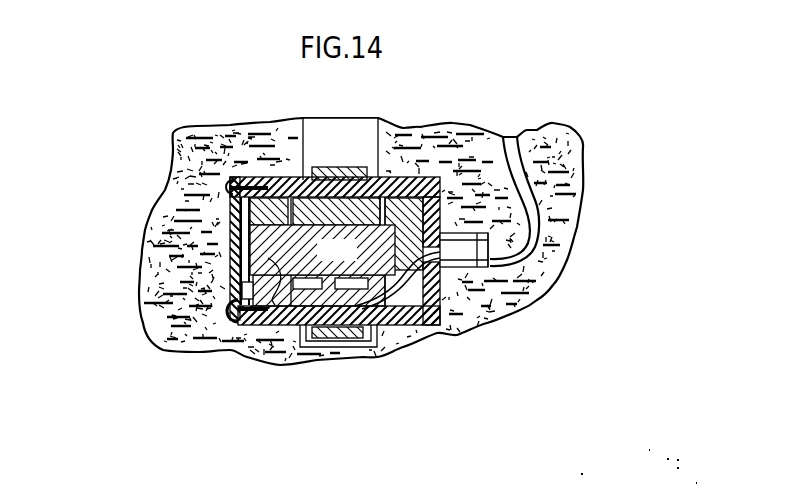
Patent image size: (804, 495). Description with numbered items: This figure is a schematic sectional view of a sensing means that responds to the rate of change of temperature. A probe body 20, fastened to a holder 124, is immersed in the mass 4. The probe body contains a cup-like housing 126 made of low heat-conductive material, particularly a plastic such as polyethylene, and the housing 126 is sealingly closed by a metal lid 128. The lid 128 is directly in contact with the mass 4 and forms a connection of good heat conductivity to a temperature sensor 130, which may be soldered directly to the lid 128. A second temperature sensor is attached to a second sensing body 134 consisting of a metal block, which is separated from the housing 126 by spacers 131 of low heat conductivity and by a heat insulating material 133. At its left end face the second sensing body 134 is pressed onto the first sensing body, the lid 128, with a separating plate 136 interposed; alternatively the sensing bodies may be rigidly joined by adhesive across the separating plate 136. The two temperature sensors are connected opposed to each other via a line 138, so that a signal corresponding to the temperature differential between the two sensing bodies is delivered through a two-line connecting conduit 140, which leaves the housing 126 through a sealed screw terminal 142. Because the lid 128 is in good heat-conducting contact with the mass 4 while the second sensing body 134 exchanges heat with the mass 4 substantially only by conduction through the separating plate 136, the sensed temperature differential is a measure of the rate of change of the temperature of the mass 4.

The mass 4 is at (567, 221).
The probe body 20 is at (393, 150).
The holder 124 is at (348, 132).
The cup-like housing 126 is at (523, 174).
The metal lid 128 is at (228, 213).
The temperature sensor 130 is at (227, 301).
The spacers 131 is at (383, 208).
The heat insulating material 133 is at (413, 342).
The second sensing body 134 is at (281, 302).
The separating plate 136 is at (265, 180).
The line 138 is at (322, 250).
The two-line connecting conduit 140 is at (457, 331).
The sealed screw terminal 142 is at (505, 314).